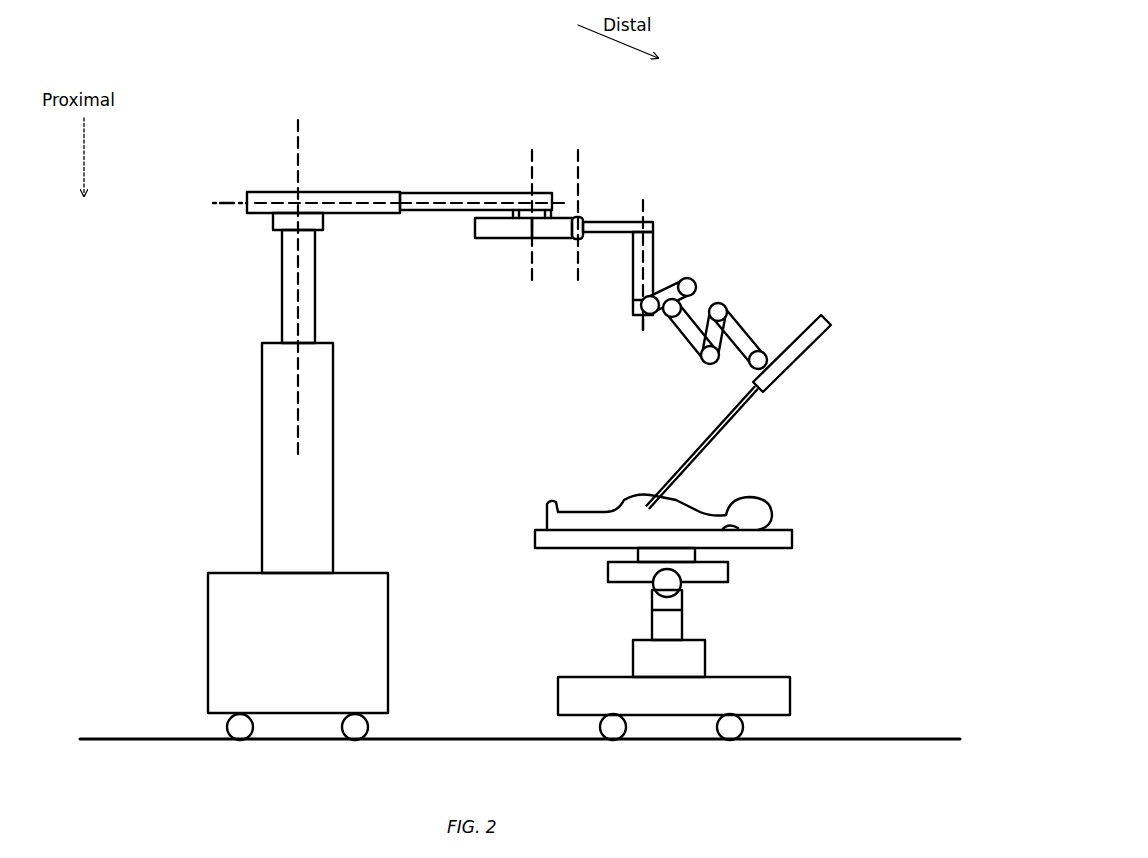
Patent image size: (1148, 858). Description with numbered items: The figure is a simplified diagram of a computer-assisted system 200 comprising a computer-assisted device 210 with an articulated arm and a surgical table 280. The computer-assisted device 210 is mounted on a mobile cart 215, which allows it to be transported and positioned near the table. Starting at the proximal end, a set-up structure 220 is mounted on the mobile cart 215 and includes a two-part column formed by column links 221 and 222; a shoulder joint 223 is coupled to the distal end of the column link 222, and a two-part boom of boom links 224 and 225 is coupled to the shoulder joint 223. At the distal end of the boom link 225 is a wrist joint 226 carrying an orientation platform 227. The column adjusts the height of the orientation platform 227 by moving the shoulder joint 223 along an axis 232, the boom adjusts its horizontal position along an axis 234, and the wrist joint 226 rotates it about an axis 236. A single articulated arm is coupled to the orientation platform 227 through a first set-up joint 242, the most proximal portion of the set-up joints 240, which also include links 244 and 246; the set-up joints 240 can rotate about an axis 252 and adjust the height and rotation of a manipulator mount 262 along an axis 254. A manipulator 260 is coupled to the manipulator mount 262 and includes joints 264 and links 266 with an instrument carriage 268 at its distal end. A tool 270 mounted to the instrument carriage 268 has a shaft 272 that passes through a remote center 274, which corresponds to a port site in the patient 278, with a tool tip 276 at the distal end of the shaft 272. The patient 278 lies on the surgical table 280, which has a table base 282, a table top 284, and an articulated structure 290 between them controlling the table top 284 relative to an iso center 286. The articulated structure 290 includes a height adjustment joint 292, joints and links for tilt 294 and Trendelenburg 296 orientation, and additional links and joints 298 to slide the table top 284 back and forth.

The computer-assisted system 200 is at (247, 51).
The computer-assisted device 210 is at (297, 760).
The mobile cart 215 is at (208, 640).
The set-up structure 220 is at (185, 185).
The column link 221 is at (335, 422).
The column link 222 is at (316, 281).
The shoulder joint 223 is at (272, 228).
The boom link 224 is at (335, 192).
The boom link 225 is at (433, 193).
The wrist joint 226 is at (475, 222).
The orientation platform 227 is at (505, 240).
The axis 232 is at (298, 120).
The axis 234 is at (232, 200).
The axis 236 is at (532, 150).
The set-up joints 240 is at (580, 187).
The first set-up joint 242 is at (583, 218).
The link 244 is at (655, 226).
The link 246 is at (655, 245).
The axis 252 is at (578, 187).
The axis 254 is at (640, 330).
The manipulator 260 is at (832, 340).
The manipulator mount 262 is at (635, 312).
The joints 264 is at (640, 304).
The links 266 is at (670, 292).
The instrument carriage 268 is at (805, 358).
The tool 270 is at (893, 353).
The shaft 272 is at (765, 402).
The remote center 274 is at (657, 482).
The tool tip 276 is at (653, 508).
The patient 278 is at (772, 508).
The surgical table 280 is at (672, 760).
The table base 282 is at (558, 680).
The table top 284 is at (550, 552).
The iso center 286 is at (670, 508).
The articulated structure 290 is at (797, 548).
The height adjustment joint 292 is at (690, 650).
The tilt 294 is at (652, 605).
The Trendelenburg 296 is at (685, 585).
The links and joints 298 is at (612, 560).